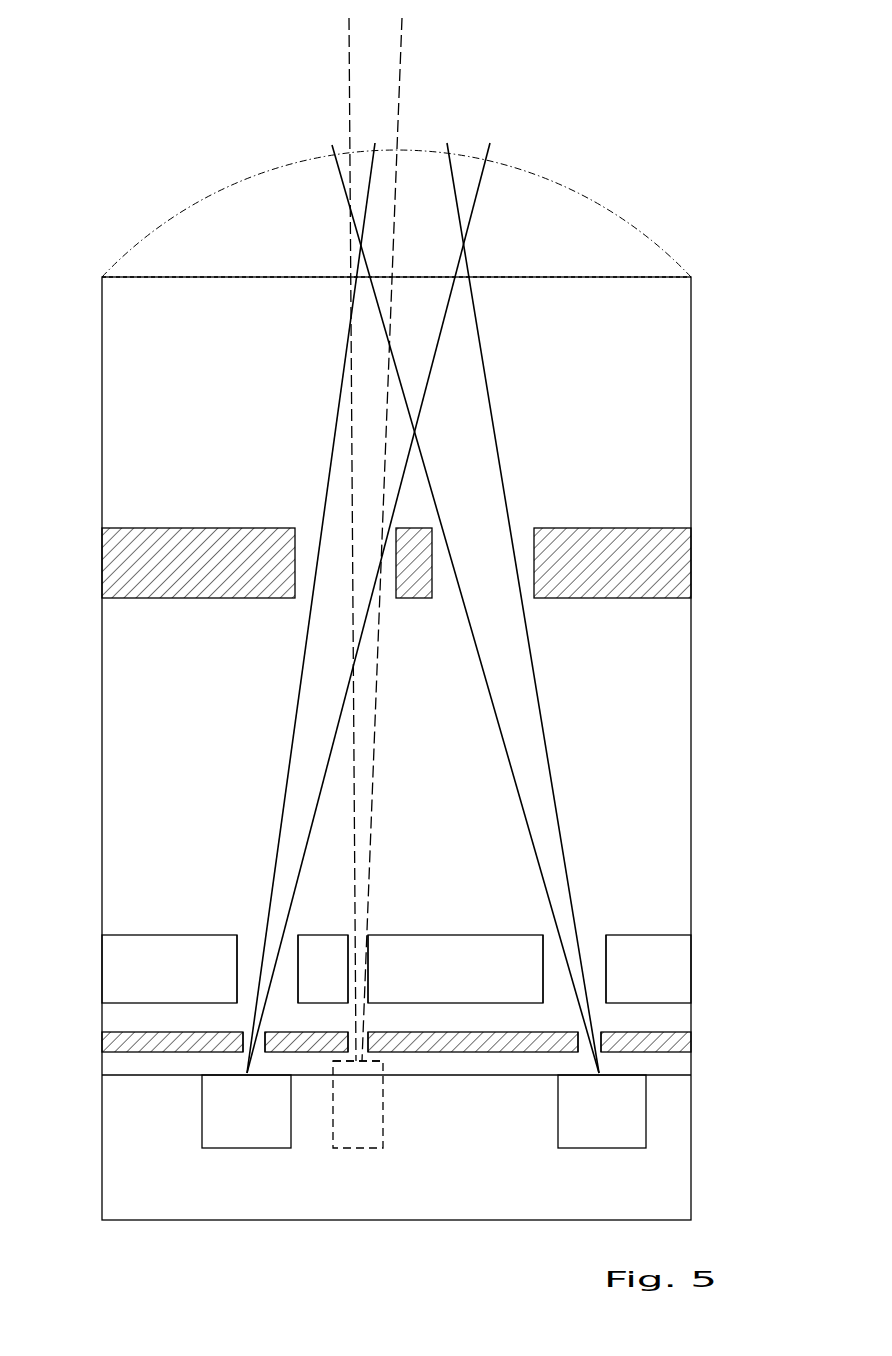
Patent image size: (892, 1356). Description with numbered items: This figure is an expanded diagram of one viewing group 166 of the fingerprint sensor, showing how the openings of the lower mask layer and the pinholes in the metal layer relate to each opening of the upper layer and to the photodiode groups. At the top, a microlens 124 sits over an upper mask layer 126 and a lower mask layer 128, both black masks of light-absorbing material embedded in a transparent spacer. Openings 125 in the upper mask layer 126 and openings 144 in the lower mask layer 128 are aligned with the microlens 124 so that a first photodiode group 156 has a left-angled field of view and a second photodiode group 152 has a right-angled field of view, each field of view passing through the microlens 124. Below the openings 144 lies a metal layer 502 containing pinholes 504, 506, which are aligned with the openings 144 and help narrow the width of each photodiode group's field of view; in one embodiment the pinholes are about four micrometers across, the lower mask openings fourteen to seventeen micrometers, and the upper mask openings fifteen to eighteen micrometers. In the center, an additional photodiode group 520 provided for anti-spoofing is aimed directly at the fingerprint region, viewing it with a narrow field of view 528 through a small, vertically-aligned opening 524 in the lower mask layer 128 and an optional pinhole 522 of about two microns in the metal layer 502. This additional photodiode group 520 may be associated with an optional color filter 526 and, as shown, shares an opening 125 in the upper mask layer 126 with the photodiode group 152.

The microlens 124 is at (447, 227).
The openings in upper mask layer 125 is at (382, 525).
The upper mask layer 126 is at (668, 537).
The lower mask layer 128 is at (445, 981).
The openings in lower mask layer 144 is at (303, 920).
The second photodiode group 152 is at (254, 1135).
The first photodiode group 156 is at (590, 1143).
The viewing group 166 is at (612, 197).
The metal layer 502 is at (691, 1032).
The pinhole 504 is at (243, 1062).
The pinhole 506 is at (610, 1059).
The additional photodiode group 520 is at (360, 1140).
The optional pinhole 522 is at (380, 1060).
The vertically-aligned opening 524 is at (373, 920).
The color filter 526 is at (360, 1070).
The narrow field of view 528 is at (398, 35).